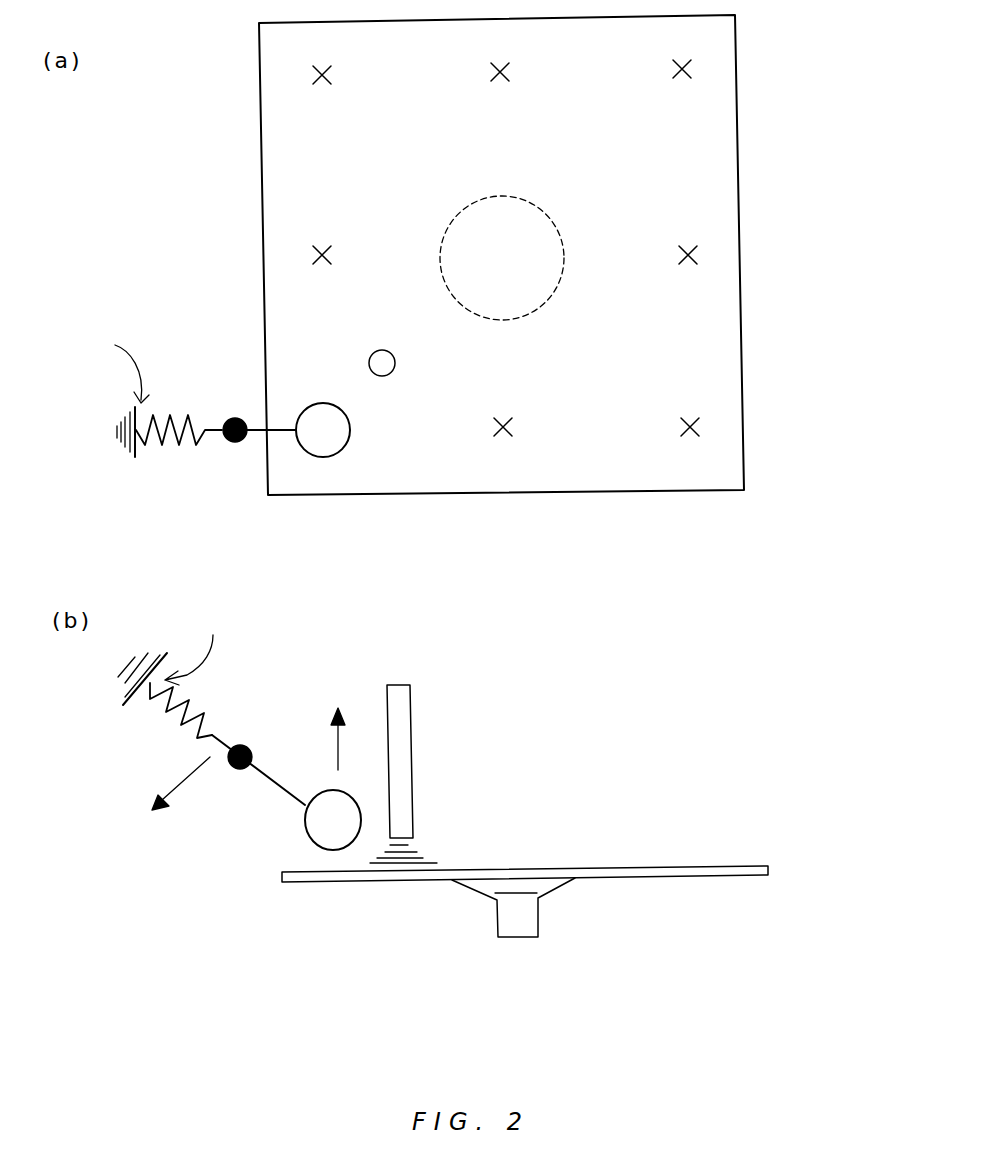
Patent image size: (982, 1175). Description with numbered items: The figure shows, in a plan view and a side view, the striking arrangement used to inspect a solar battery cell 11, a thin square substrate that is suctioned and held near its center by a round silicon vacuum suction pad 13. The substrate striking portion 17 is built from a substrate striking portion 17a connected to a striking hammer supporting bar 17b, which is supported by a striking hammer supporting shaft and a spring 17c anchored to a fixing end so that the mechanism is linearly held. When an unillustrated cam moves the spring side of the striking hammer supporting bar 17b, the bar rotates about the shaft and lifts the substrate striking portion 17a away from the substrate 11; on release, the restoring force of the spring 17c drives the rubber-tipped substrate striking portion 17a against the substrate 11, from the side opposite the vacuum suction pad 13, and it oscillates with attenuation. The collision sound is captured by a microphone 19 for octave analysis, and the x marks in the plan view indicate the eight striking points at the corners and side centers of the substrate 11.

The solar battery cell 11 is at (698, 185).
The vacuum suction pad 13 is at (517, 927).
The substrate striking portion 17 is at (200, 649).
The substrate striking portion 17a is at (323, 437).
The striking hammer supporting bar 17b is at (282, 428).
The spring 17c is at (172, 443).
The microphone 19 is at (388, 372).